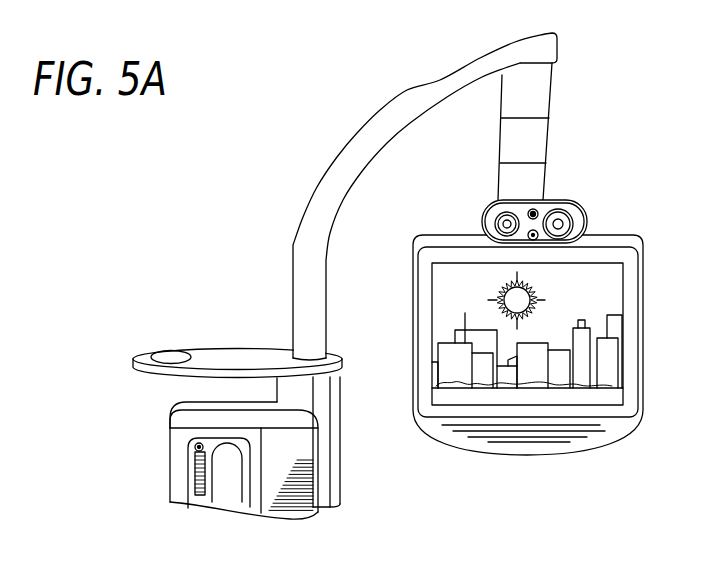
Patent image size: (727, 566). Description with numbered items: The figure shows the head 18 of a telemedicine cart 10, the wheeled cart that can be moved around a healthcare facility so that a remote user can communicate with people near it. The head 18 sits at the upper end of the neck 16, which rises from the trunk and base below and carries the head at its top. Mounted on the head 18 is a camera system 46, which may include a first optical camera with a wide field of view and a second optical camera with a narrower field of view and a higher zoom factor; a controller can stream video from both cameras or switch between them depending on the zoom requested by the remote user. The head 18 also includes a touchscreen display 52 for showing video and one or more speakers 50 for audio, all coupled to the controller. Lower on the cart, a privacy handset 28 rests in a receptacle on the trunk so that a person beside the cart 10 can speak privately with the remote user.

The telemedicine cart 10 is at (305, 83).
The neck 16 is at (300, 222).
The head 18 is at (618, 236).
The privacy handset 28 is at (223, 482).
The camera system 46 is at (556, 200).
The speakers 50 is at (530, 437).
The touchscreen display 52 is at (588, 296).